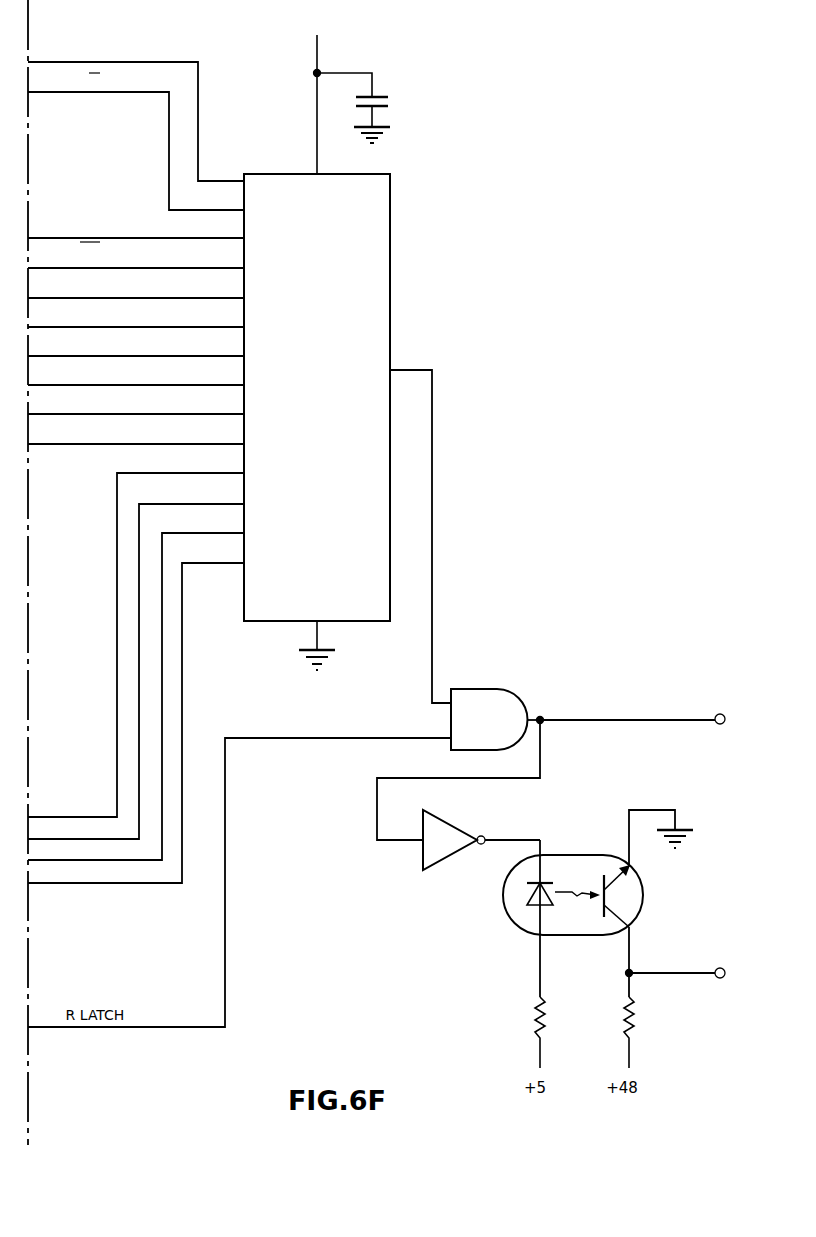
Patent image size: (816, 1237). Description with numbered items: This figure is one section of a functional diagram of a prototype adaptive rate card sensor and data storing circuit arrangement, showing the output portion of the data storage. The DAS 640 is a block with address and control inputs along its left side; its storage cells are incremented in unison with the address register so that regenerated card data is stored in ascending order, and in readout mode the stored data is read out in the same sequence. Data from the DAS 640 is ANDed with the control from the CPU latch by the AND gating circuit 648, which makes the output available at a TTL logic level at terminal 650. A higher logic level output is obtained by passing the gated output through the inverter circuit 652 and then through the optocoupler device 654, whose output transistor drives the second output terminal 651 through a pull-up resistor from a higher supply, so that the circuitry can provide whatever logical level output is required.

The DAS 640 is at (383, 321).
The AND gating circuit 648 is at (494, 693).
The output terminal 650 is at (725, 719).
The output terminal 651 is at (725, 973).
The inverter circuit 652 is at (466, 849).
The optocoupler 654 is at (584, 868).